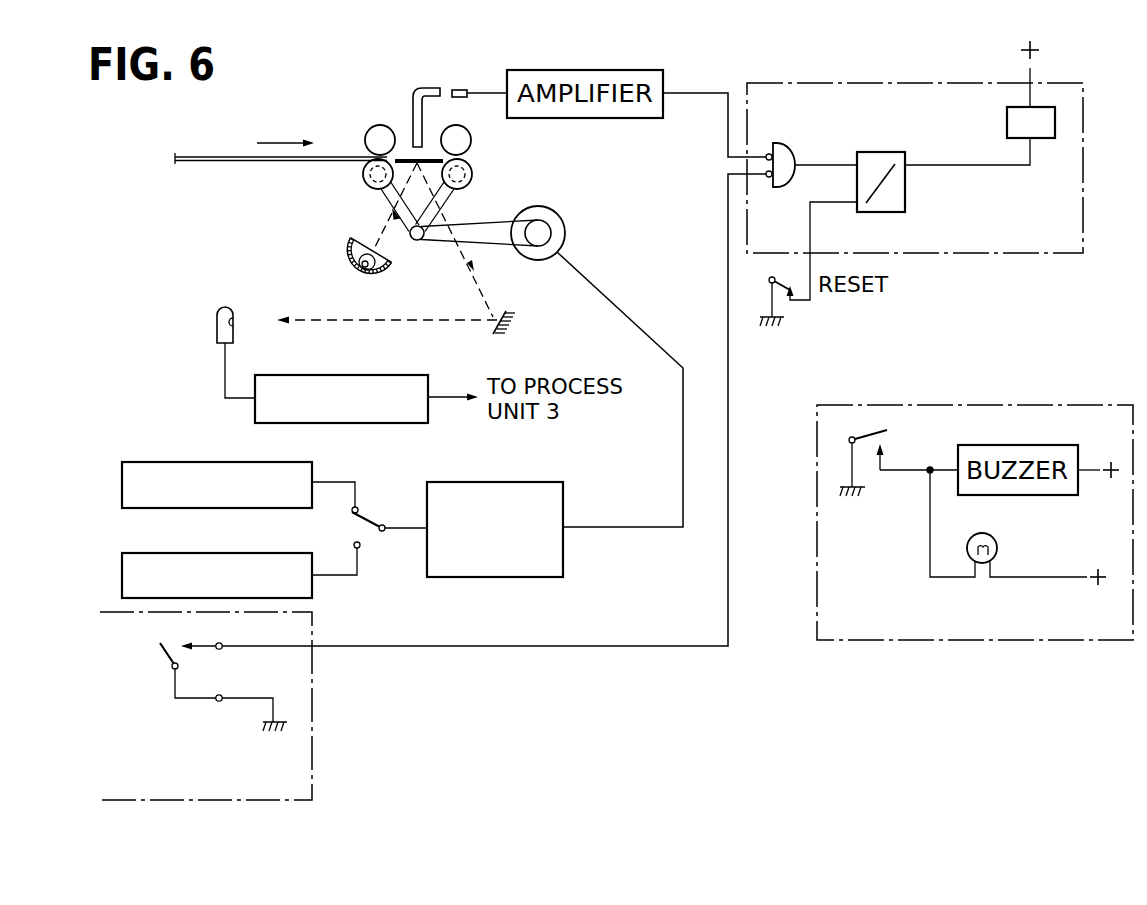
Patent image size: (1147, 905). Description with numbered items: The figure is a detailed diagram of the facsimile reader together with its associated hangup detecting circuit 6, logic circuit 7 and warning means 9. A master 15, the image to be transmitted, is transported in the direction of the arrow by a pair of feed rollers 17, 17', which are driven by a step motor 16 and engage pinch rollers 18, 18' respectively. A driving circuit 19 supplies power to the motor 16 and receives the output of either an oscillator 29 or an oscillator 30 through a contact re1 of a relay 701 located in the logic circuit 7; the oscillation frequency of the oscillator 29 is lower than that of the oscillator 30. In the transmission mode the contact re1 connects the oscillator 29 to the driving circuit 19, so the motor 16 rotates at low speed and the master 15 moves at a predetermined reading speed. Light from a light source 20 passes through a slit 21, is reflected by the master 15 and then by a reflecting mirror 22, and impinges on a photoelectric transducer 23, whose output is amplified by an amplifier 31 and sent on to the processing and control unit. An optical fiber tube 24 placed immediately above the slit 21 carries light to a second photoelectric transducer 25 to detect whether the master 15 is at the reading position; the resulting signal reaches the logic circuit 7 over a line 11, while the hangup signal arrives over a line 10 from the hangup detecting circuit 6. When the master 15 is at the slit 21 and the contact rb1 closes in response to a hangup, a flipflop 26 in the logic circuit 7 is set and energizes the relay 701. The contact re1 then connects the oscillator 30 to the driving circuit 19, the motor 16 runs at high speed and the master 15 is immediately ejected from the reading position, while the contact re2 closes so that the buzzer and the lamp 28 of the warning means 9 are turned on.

The hangup detecting circuit 6 is at (312, 688).
The transmitter-hangup logic circuit 7 is at (834, 126).
The warning means 9 is at (885, 560).
The signal line to hangup detecting circuit 10 is at (625, 643).
The line 11 is at (697, 97).
The master 15 is at (198, 163).
The step motor 16 is at (557, 220).
The feed roller 17 is at (350, 181).
The feed roller 17' is at (480, 181).
The pinch roller 18 is at (360, 124).
The pinch roller 18' is at (483, 141).
The driving circuit 19 is at (528, 482).
The light source 20 is at (390, 266).
The slit 21 is at (408, 157).
The reflecting mirror 22 is at (506, 310).
The photoelectric transducer 23 is at (228, 306).
The optical fiber tube 24 is at (420, 89).
The photoelectric transducer 25 is at (459, 90).
The flipflop 26 is at (883, 152).
The lamp 28 is at (994, 535).
The oscillator 29 is at (168, 462).
The oscillator 30 is at (130, 553).
The amplifier 31 is at (380, 374).
The relay 701 is at (1007, 120).
The relay contact re1 is at (369, 528).
The relay contact re2 is at (882, 460).
The contact rb1 is at (214, 673).